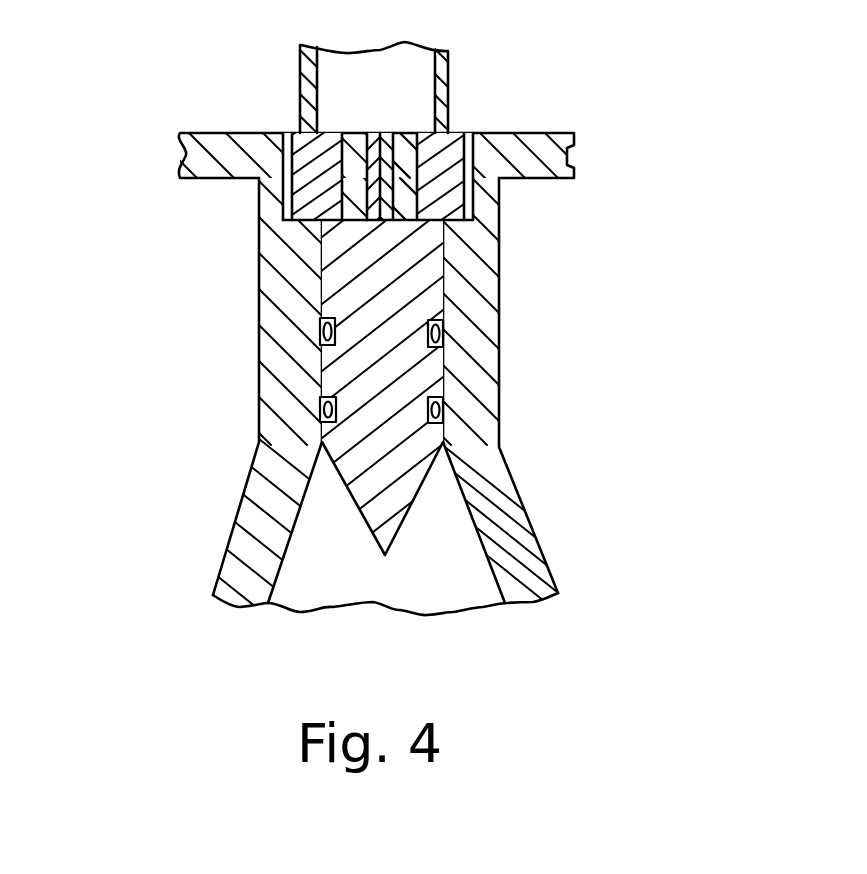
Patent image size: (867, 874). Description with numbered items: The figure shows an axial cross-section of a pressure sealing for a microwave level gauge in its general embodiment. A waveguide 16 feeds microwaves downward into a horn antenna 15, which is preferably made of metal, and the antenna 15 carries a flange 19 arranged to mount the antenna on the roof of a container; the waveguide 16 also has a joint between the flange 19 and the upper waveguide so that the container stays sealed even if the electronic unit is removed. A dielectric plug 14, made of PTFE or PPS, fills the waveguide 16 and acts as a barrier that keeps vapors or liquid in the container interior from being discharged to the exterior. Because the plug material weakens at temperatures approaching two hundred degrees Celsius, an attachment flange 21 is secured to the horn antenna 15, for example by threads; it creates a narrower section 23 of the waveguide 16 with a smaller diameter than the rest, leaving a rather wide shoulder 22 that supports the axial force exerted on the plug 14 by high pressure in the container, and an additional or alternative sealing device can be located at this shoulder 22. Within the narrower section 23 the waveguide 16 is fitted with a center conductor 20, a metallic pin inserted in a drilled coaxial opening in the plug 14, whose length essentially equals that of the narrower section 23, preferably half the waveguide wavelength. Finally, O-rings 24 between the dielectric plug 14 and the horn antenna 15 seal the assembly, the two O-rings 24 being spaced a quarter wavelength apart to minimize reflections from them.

The dielectric plug 14 is at (393, 360).
The horn antenna 15 is at (450, 280).
The waveguide 16 is at (375, 97).
The flange 19 is at (528, 153).
The center conductor 20 is at (377, 165).
The attachment flange 21 is at (447, 153).
The shoulder 22 is at (405, 222).
The narrower section 23 is at (407, 150).
The O-rings 24 is at (444, 418).